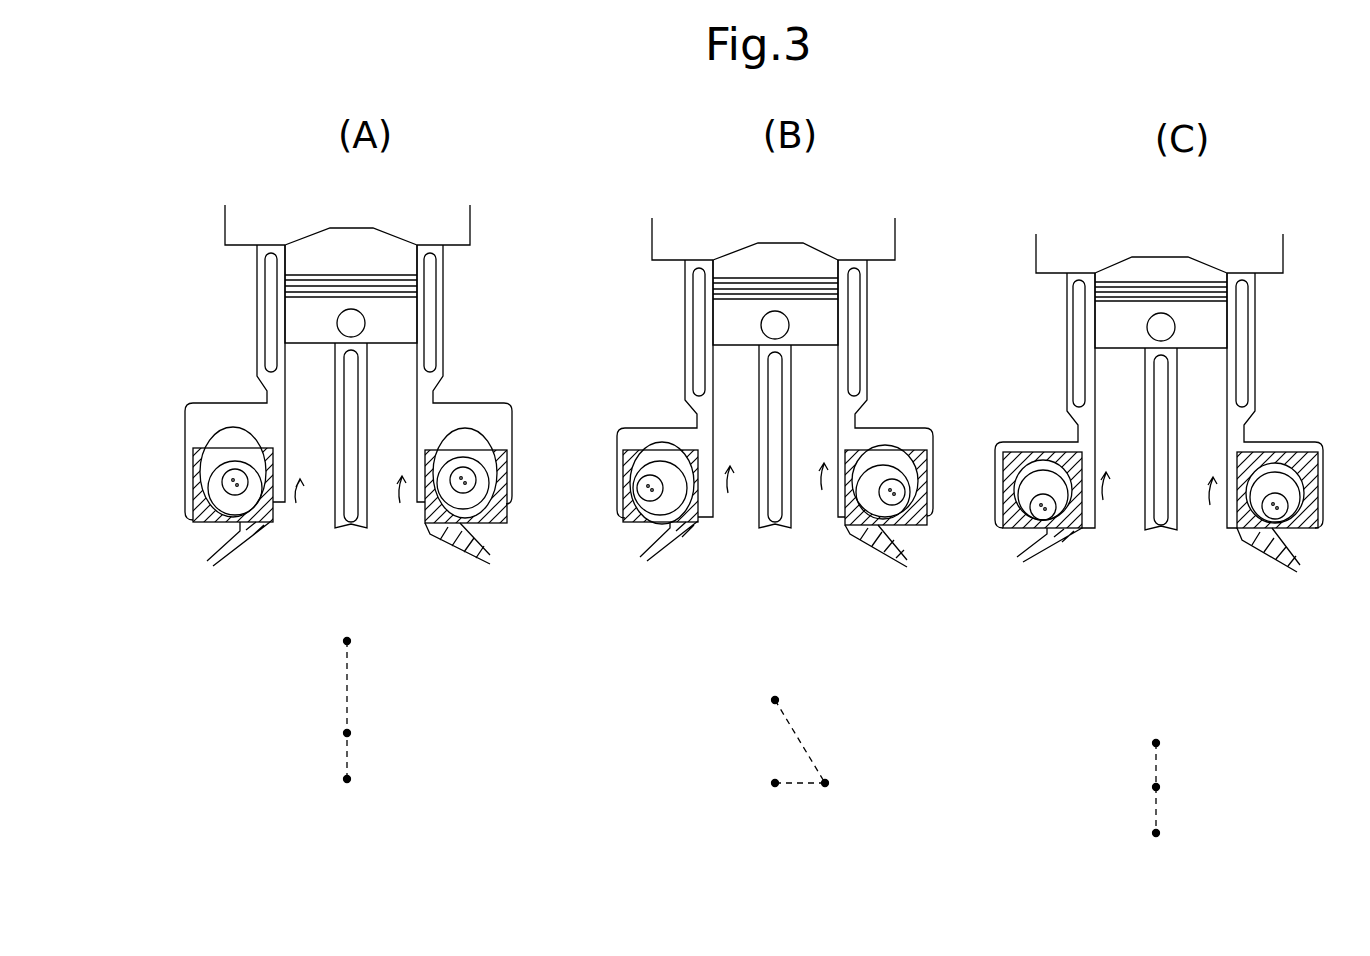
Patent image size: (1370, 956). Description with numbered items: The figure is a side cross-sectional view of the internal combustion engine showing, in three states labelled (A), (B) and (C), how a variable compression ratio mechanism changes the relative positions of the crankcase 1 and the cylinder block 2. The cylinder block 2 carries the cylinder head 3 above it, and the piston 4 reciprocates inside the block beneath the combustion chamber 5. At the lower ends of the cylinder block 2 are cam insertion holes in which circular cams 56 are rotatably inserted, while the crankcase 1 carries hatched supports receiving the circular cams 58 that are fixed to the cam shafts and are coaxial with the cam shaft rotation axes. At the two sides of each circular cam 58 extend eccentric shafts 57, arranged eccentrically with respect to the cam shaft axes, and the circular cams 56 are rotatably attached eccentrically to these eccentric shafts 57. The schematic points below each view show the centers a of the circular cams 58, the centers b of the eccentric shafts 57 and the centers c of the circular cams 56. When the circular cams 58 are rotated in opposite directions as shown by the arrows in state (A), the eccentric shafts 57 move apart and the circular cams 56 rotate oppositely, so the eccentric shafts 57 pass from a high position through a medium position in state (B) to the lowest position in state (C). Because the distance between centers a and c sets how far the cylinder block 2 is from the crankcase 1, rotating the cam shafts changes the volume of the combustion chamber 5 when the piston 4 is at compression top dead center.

The crankcase 1 is at (265, 538).
The cylinder block 2 is at (443, 282).
The cylinder head 3 is at (470, 219).
The piston 4 is at (405, 321).
The combustion chamber 5 is at (330, 253).
The circular cam 56 is at (210, 434).
The eccentric shaft 57 is at (205, 491).
The circular cam 58 is at (215, 516).
The center of circular cam 58 a is at (250, 498).
The center of eccentric shaft b is at (238, 475).
The center of circular cam 56 c is at (263, 448).